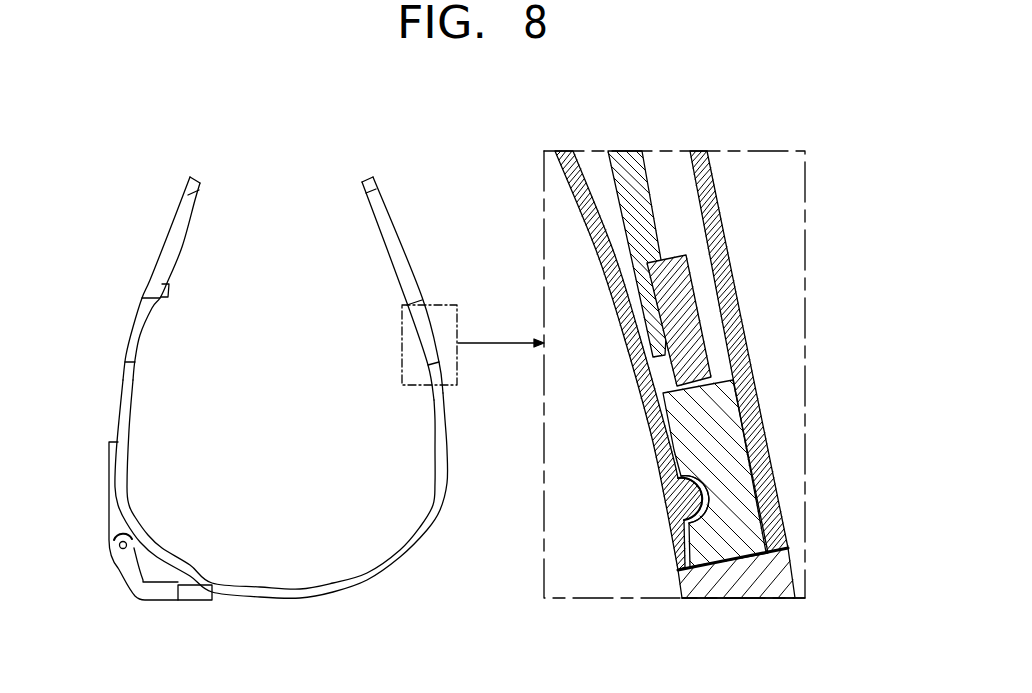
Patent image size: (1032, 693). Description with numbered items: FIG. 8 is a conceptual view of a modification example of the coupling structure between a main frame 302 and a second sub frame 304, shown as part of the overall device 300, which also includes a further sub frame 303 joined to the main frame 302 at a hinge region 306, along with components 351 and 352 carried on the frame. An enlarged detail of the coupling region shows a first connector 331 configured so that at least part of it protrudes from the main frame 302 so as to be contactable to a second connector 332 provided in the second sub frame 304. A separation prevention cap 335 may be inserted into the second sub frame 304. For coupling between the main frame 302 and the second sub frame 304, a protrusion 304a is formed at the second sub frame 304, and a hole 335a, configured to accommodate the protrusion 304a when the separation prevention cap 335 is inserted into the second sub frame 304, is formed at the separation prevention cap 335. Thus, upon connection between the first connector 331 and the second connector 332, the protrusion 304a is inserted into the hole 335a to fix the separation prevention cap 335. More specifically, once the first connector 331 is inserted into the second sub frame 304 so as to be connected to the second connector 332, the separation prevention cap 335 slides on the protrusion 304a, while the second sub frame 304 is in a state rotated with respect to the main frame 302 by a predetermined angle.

The glasses-type wearable device 300 is at (283, 145).
The main frame 302 is at (348, 580).
The first temple 303 is at (167, 257).
The second sub frame 304 is at (398, 272).
The protrusion 304a is at (683, 507).
The hinge 306 is at (118, 522).
The first connector 331 is at (683, 303).
The second connector 332 is at (627, 172).
The separation prevention cap 335 is at (757, 421).
The hole 335a is at (687, 497).
The camera 351 is at (192, 600).
The microphone 352 is at (168, 293).